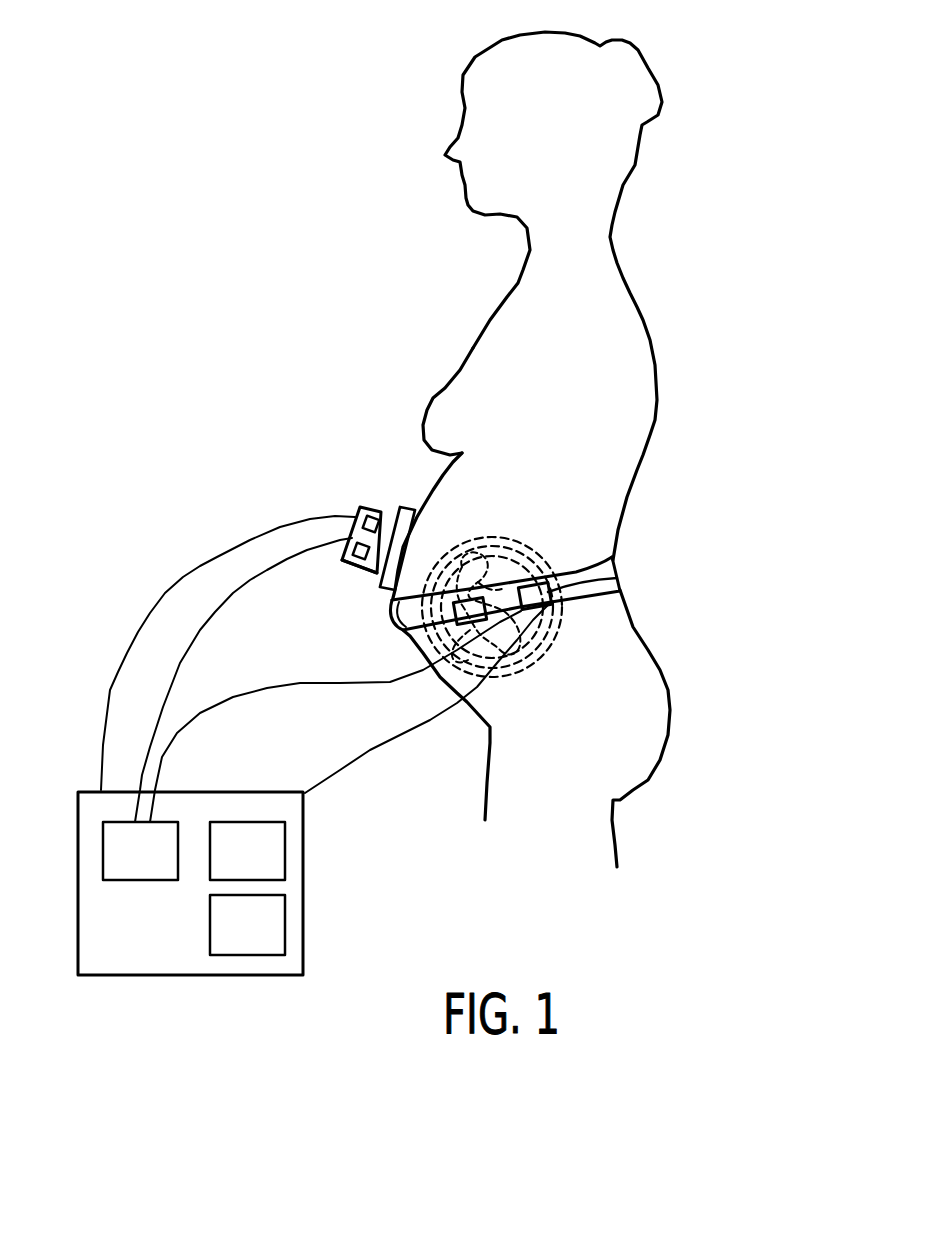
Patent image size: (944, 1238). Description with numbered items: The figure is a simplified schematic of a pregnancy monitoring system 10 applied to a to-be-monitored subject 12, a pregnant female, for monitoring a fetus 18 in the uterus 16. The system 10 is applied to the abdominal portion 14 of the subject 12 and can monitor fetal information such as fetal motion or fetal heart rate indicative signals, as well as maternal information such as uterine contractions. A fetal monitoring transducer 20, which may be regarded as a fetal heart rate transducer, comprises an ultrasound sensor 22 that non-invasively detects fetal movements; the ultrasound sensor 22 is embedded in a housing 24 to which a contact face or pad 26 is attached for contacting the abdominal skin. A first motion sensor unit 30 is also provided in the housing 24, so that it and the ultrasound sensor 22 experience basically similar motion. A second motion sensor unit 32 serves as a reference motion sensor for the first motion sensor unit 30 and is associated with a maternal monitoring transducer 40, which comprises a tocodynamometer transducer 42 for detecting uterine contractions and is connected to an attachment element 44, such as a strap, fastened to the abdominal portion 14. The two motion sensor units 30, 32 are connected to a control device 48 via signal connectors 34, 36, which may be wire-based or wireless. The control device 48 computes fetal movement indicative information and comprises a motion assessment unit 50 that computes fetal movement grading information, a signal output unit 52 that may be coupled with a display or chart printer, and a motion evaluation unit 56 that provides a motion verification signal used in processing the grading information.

The pregnancy monitoring system 10 is at (177, 305).
The to-be-monitored subject 12 is at (428, 291).
The abdominal portion 14 is at (433, 498).
The uterus 16 is at (547, 553).
The fetus 18 is at (535, 650).
The fetal monitoring transducer 20 is at (338, 496).
The ultrasound sensor 22 is at (375, 515).
The housing 24 is at (352, 548).
The contact face or pad 26 is at (385, 578).
The first motion sensor unit 30 is at (357, 560).
The second motion sensor unit 32 is at (485, 597).
The signal connector 34 is at (185, 655).
The signal connector 36 is at (247, 703).
The maternal monitoring transducer 40 is at (609, 610).
The tocodynamometer transducer 42 is at (617, 578).
The attachment element 44 is at (613, 563).
The control device 48 is at (105, 987).
The motion assessment unit 50 is at (148, 863).
The signal output unit 52 is at (285, 860).
The motion evaluation unit 56 is at (285, 925).